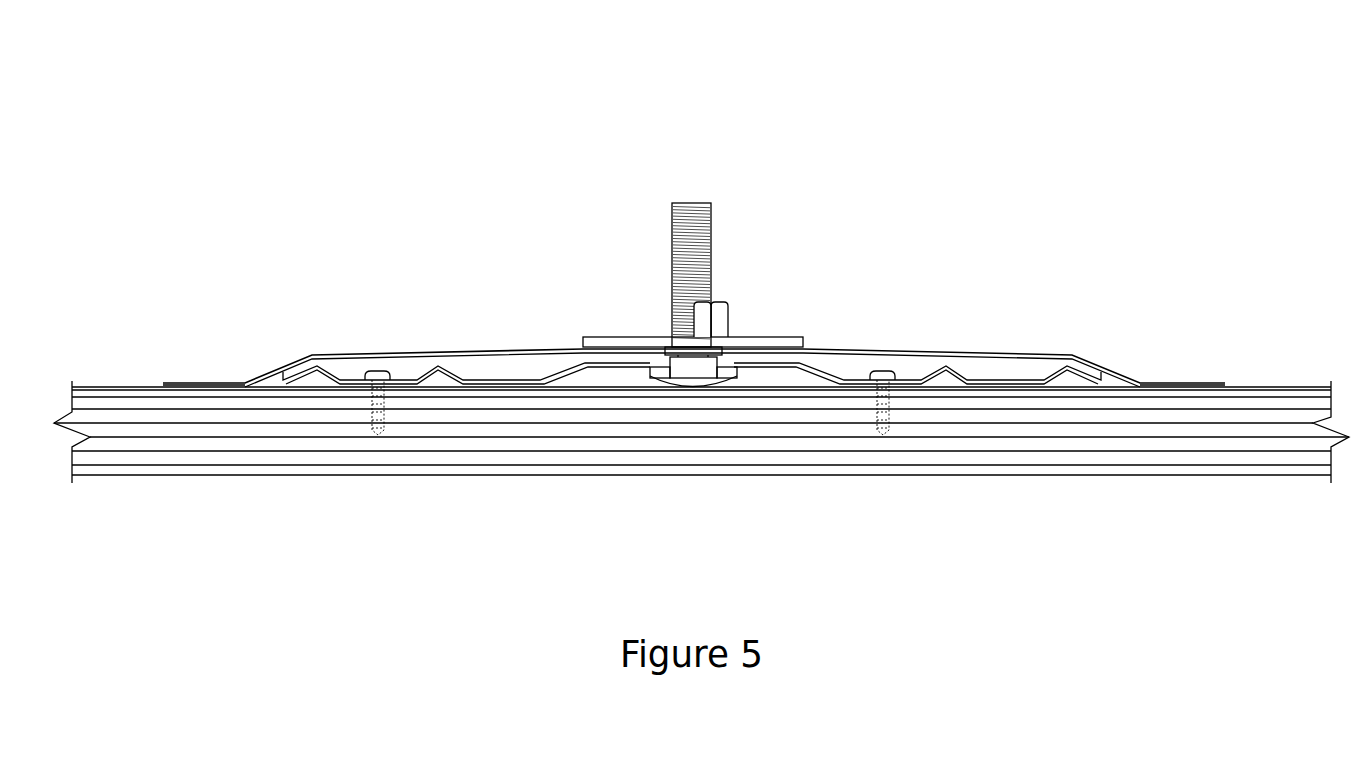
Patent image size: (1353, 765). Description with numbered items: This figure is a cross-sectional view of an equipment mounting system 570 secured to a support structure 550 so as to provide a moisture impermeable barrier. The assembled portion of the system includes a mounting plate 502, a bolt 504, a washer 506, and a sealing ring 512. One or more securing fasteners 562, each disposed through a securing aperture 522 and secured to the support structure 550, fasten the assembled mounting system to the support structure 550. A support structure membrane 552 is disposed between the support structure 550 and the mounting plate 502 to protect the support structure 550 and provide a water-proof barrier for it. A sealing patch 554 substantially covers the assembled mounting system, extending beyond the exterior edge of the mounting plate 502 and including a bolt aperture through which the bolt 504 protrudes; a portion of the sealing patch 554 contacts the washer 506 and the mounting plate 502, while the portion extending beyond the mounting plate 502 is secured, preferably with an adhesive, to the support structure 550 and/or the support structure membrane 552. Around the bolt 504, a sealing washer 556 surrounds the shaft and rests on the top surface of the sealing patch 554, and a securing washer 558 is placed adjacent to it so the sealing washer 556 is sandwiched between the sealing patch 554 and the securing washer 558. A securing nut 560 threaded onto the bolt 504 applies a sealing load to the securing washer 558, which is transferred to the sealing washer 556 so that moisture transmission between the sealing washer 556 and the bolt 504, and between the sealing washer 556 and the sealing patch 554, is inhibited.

The equipment mounting system 570 is at (410, 114).
The bolt 504 is at (678, 215).
The securing washer 558 is at (610, 337).
The sealing washer 556 is at (583, 348).
The securing nut 560 is at (728, 318).
The securing fastener 562 is at (377, 371).
The securing aperture 522 is at (893, 377).
The sealing patch 554 is at (1102, 377).
The support structure membrane 552 is at (1275, 388).
The support structure 550 is at (92, 408).
The sealing ring 512 is at (662, 375).
The washer 506 is at (772, 352).
The mounting plate 502 is at (1068, 370).